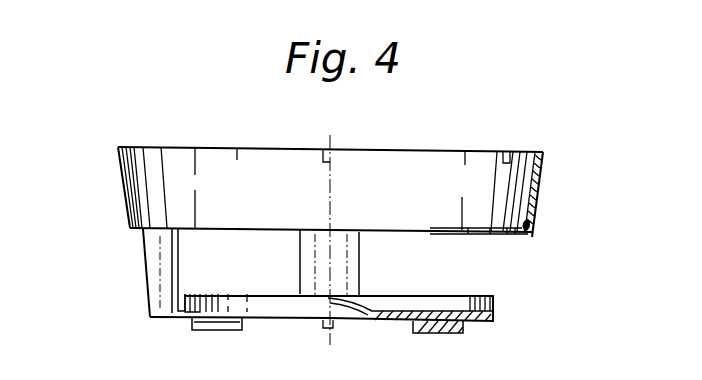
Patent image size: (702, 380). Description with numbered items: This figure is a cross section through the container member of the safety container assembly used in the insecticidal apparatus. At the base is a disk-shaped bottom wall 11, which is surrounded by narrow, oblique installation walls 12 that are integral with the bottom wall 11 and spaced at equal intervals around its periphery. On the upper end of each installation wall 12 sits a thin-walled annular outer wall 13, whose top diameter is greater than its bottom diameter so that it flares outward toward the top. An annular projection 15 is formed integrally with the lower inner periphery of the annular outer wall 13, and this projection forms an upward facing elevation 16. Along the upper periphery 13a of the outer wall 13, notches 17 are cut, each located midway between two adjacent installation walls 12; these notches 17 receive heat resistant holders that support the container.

The bottom wall 11 is at (388, 321).
The installation walls 12 is at (150, 267).
The annular outer wall 13 is at (541, 177).
The upper periphery 13a is at (445, 144).
The annular projection 15 is at (514, 234).
The upward facing elevation 16 is at (535, 221).
The notches 17 is at (323, 153).